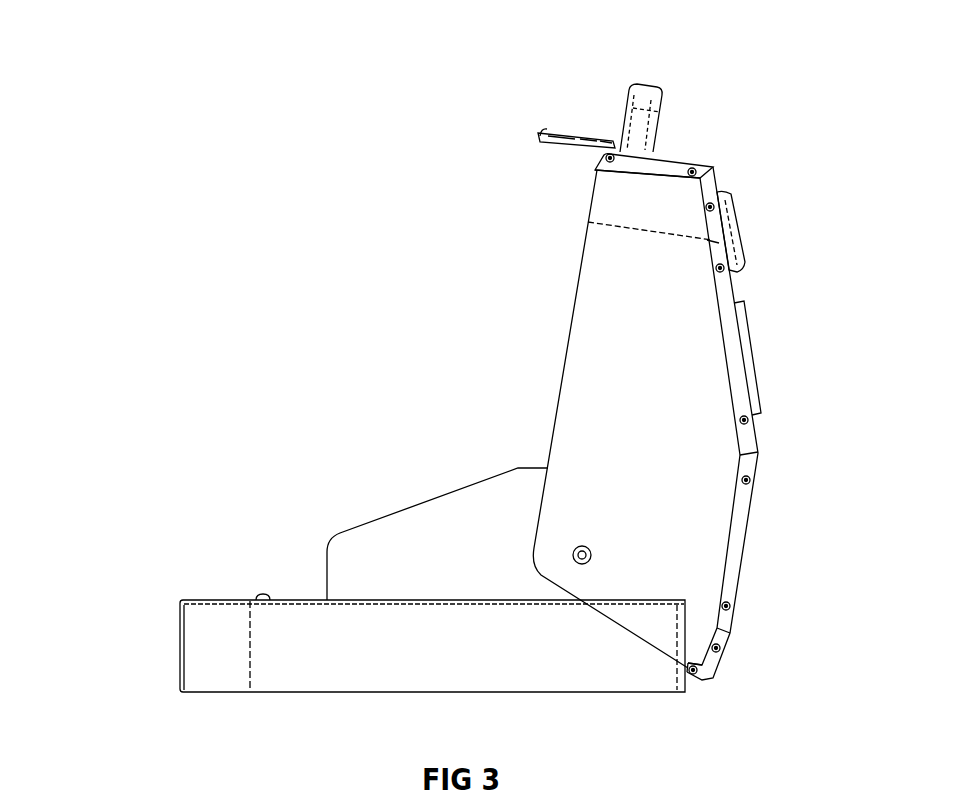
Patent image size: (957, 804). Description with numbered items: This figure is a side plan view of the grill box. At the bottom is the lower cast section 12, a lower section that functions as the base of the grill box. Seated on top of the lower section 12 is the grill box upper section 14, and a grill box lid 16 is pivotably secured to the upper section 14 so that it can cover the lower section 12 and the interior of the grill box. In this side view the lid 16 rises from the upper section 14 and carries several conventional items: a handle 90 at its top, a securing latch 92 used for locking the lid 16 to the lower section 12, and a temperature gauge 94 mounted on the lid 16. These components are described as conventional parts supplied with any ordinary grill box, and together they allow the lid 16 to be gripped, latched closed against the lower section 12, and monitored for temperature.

The lower cast section 12 is at (308, 641).
The grill box upper section 14 is at (477, 528).
The grill box lid 16 is at (655, 425).
The handle 90 is at (648, 122).
The securing latch 92 is at (540, 138).
The temperature gauge 94 is at (738, 203).